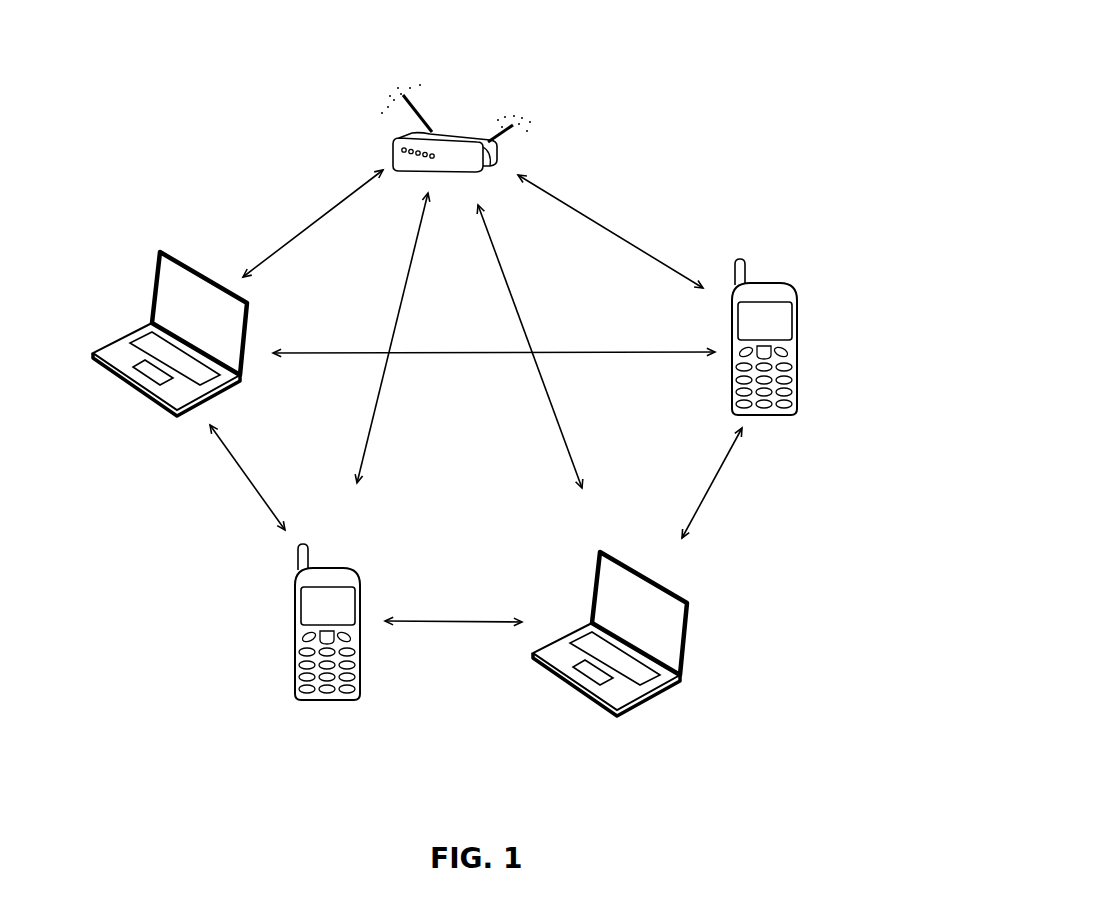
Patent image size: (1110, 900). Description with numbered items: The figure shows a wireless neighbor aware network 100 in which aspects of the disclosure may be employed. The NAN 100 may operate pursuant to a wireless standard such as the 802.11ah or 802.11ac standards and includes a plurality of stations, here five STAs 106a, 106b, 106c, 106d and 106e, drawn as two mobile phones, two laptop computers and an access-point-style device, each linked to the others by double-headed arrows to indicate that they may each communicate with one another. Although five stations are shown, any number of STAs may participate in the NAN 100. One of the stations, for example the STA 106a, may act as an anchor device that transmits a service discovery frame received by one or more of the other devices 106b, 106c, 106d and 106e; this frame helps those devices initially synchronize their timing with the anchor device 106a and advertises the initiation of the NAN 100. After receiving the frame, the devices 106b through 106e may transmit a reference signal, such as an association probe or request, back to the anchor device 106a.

The wireless neighbor aware network 100 is at (718, 35).
The STA 106a is at (339, 567).
The STA 106b is at (613, 552).
The STA 106c is at (768, 283).
The STA 106d is at (467, 137).
The STA 106e is at (173, 251).